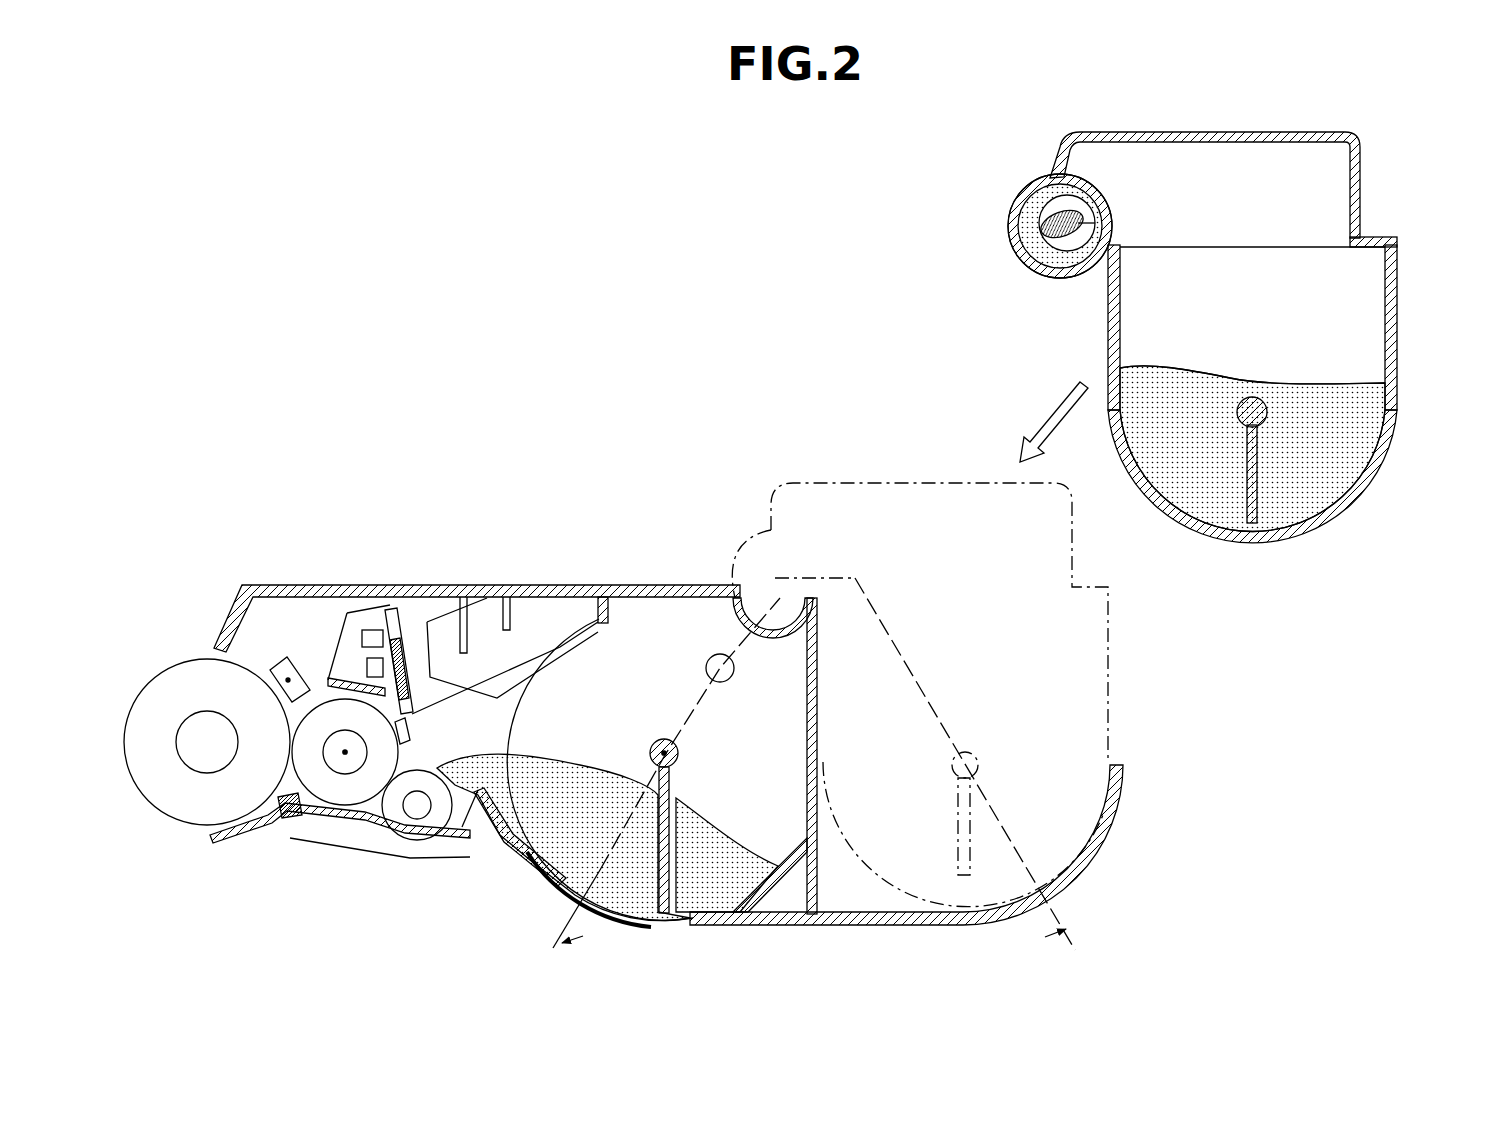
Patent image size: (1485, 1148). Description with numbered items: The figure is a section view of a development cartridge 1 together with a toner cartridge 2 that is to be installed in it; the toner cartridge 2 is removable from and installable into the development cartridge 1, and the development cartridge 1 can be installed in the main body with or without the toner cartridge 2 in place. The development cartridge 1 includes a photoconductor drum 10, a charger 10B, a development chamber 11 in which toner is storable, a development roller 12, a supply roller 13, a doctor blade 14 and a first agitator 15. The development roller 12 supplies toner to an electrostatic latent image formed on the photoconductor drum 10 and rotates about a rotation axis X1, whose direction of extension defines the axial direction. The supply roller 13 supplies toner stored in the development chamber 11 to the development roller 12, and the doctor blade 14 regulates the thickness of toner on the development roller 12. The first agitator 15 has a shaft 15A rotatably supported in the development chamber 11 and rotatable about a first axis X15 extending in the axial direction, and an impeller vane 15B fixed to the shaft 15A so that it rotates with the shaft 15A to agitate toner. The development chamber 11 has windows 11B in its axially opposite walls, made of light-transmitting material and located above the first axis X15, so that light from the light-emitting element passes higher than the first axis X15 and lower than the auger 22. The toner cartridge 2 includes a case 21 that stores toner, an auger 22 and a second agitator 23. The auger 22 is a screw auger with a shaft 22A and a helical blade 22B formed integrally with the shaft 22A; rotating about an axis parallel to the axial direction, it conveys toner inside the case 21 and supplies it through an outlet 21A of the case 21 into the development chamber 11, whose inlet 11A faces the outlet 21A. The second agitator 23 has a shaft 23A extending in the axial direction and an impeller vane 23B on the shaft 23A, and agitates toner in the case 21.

The development cartridge 1 is at (455, 580).
The toner cartridge 2 is at (1274, 128).
The photoconductor drum 10 is at (181, 811).
The charger 10B is at (302, 668).
The development chamber 11 is at (672, 690).
The inlet 11A is at (745, 608).
The windows 11B is at (712, 656).
The development roller 12 is at (323, 793).
The supply roller 13 is at (420, 827).
The doctor blade 14 is at (405, 730).
The first agitator 15 is at (728, 826).
The shaft 15A is at (678, 760).
The impeller vane 15B is at (670, 813).
The case 21 is at (1396, 330).
The outlet 21A is at (1035, 276).
The auger 22 is at (1058, 165).
The shaft 22A is at (1060, 214).
The blade 22B is at (1077, 203).
The second agitator 23 is at (1316, 524).
The shaft 23A is at (1262, 418).
The impeller vane 23B is at (1254, 495).
The rotation axis X1 is at (346, 757).
The first axis X15 is at (677, 750).